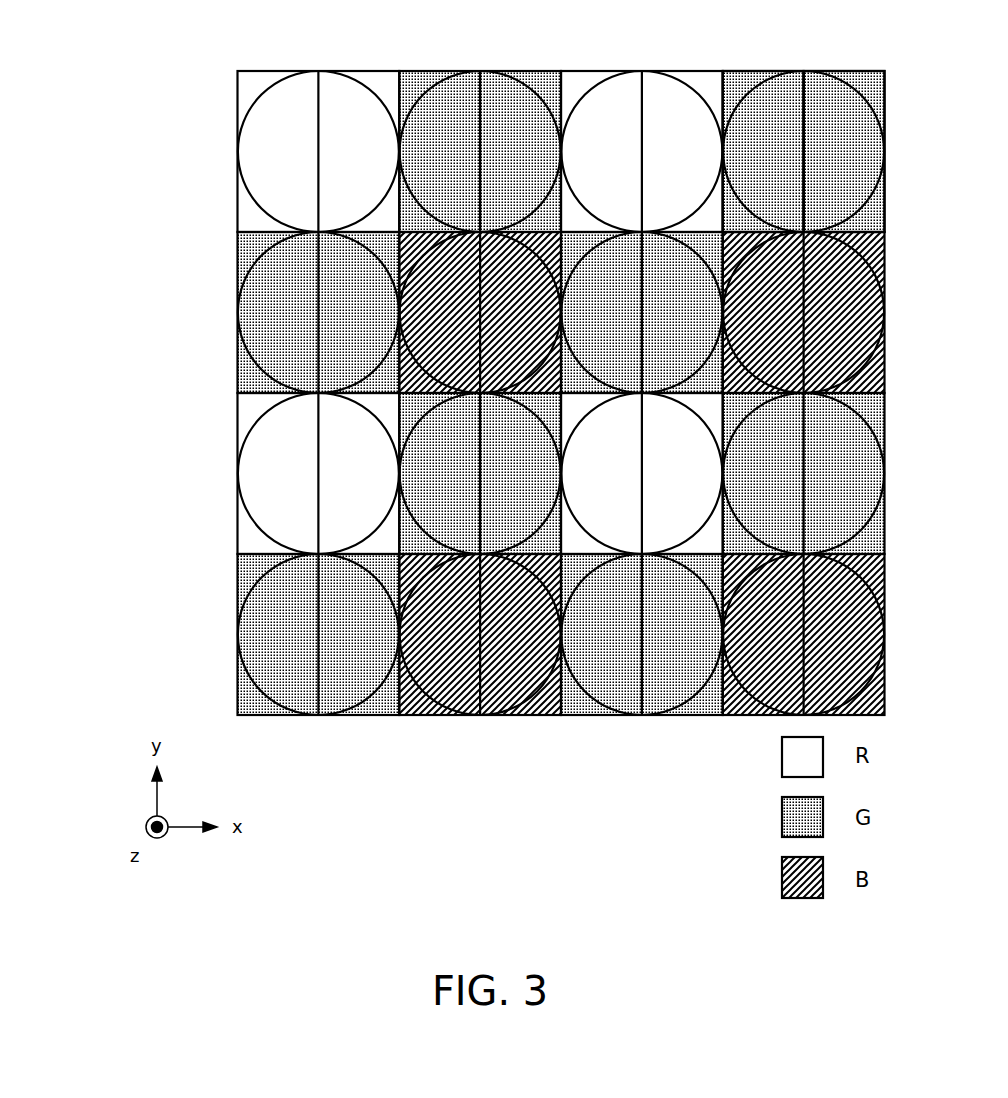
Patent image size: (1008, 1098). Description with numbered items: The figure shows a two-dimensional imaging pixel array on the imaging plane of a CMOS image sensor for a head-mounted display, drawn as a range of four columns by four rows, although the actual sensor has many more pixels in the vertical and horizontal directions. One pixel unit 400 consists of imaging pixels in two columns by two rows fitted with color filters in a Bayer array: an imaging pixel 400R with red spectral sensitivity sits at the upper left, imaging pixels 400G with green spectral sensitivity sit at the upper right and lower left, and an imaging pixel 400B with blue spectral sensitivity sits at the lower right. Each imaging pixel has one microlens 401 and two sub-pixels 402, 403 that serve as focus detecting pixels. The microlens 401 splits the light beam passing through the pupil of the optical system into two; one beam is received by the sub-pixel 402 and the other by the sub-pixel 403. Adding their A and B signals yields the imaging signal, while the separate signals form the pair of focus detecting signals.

The pixel unit 400 is at (125, 111).
The imaging pixel 400R is at (256, 160).
The imaging pixels 400G is at (256, 303).
The imaging pixel 400B is at (435, 353).
The microlens 401 is at (282, 72).
The sub-pixel 402 is at (773, 97).
The sub-pixel 403 is at (830, 95).